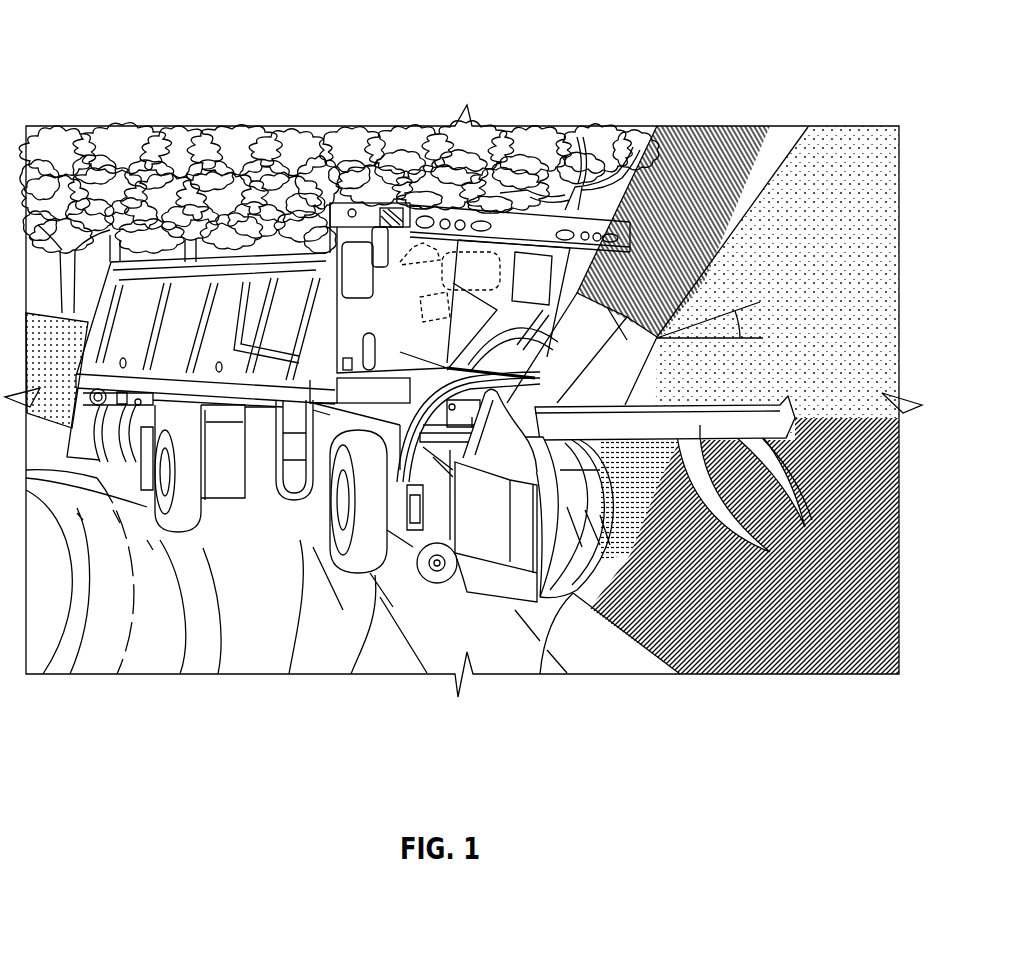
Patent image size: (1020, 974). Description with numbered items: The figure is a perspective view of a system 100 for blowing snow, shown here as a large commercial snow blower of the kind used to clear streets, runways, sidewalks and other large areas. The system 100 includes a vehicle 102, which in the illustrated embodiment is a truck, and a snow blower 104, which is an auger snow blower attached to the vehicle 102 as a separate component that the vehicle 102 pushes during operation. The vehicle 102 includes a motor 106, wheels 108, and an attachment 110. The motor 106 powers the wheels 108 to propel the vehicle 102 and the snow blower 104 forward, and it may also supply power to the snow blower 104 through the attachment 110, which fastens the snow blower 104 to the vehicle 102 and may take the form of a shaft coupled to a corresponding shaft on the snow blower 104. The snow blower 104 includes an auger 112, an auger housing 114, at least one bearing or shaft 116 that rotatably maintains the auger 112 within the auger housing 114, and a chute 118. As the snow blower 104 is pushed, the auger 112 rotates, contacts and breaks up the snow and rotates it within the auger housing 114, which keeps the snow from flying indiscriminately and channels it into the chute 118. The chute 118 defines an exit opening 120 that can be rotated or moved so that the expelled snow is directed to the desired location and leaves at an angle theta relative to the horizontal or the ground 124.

The system for blowing snow 100 is at (120, 86).
The vehicle 102 is at (350, 128).
The snow blower 104 is at (888, 313).
The motor 106 is at (316, 475).
The wheels 108 is at (356, 588).
The attachment 110 is at (329, 543).
The auger 112 is at (670, 650).
The auger housing 114 is at (600, 600).
The bearing or shaft 116 is at (548, 592).
The chute 118 is at (743, 127).
The exit opening 120 is at (593, 128).
The ground 124 is at (877, 672).